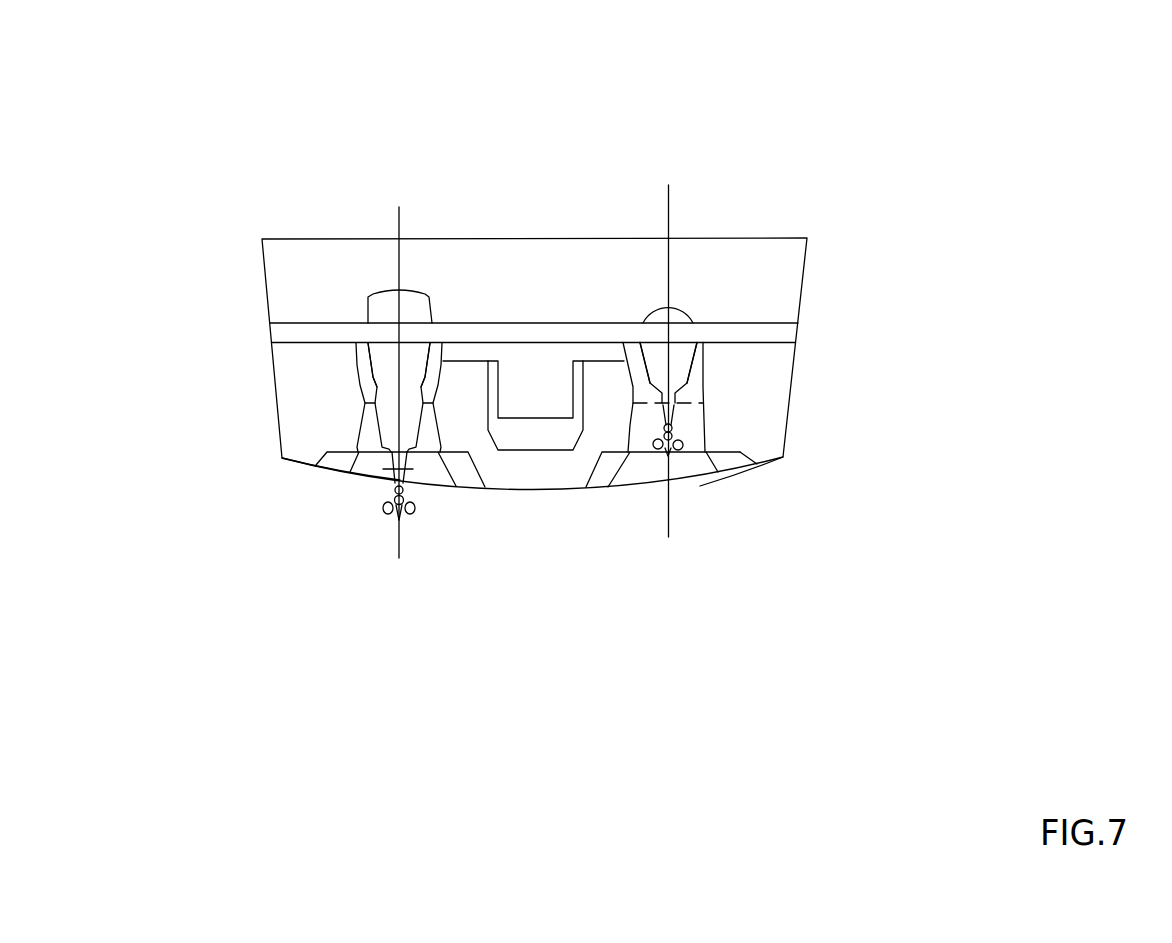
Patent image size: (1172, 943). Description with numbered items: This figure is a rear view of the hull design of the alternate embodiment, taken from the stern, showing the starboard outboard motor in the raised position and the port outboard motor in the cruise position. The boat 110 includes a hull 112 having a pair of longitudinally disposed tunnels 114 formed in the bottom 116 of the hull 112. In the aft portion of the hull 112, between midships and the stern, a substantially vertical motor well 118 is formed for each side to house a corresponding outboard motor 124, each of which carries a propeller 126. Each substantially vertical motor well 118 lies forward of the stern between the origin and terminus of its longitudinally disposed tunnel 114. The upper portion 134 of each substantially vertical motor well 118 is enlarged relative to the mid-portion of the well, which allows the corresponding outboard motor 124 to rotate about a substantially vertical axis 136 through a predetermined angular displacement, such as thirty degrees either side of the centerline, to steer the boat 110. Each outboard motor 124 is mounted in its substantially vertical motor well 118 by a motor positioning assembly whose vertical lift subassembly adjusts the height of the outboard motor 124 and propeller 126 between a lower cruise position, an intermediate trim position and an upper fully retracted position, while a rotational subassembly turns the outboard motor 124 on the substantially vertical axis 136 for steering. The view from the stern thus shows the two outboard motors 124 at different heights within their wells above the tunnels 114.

The boat 110 is at (872, 177).
The hull 112 is at (202, 458).
The longitudinally disposed tunnel 114 is at (335, 462).
The bottom 116 is at (760, 464).
The substantially vertical motor well 118 is at (368, 382).
The outboard motor 124 is at (446, 301).
The propeller 126 is at (386, 518).
The upper portion 134 is at (437, 372).
The substantially vertical axis 136 is at (398, 217).